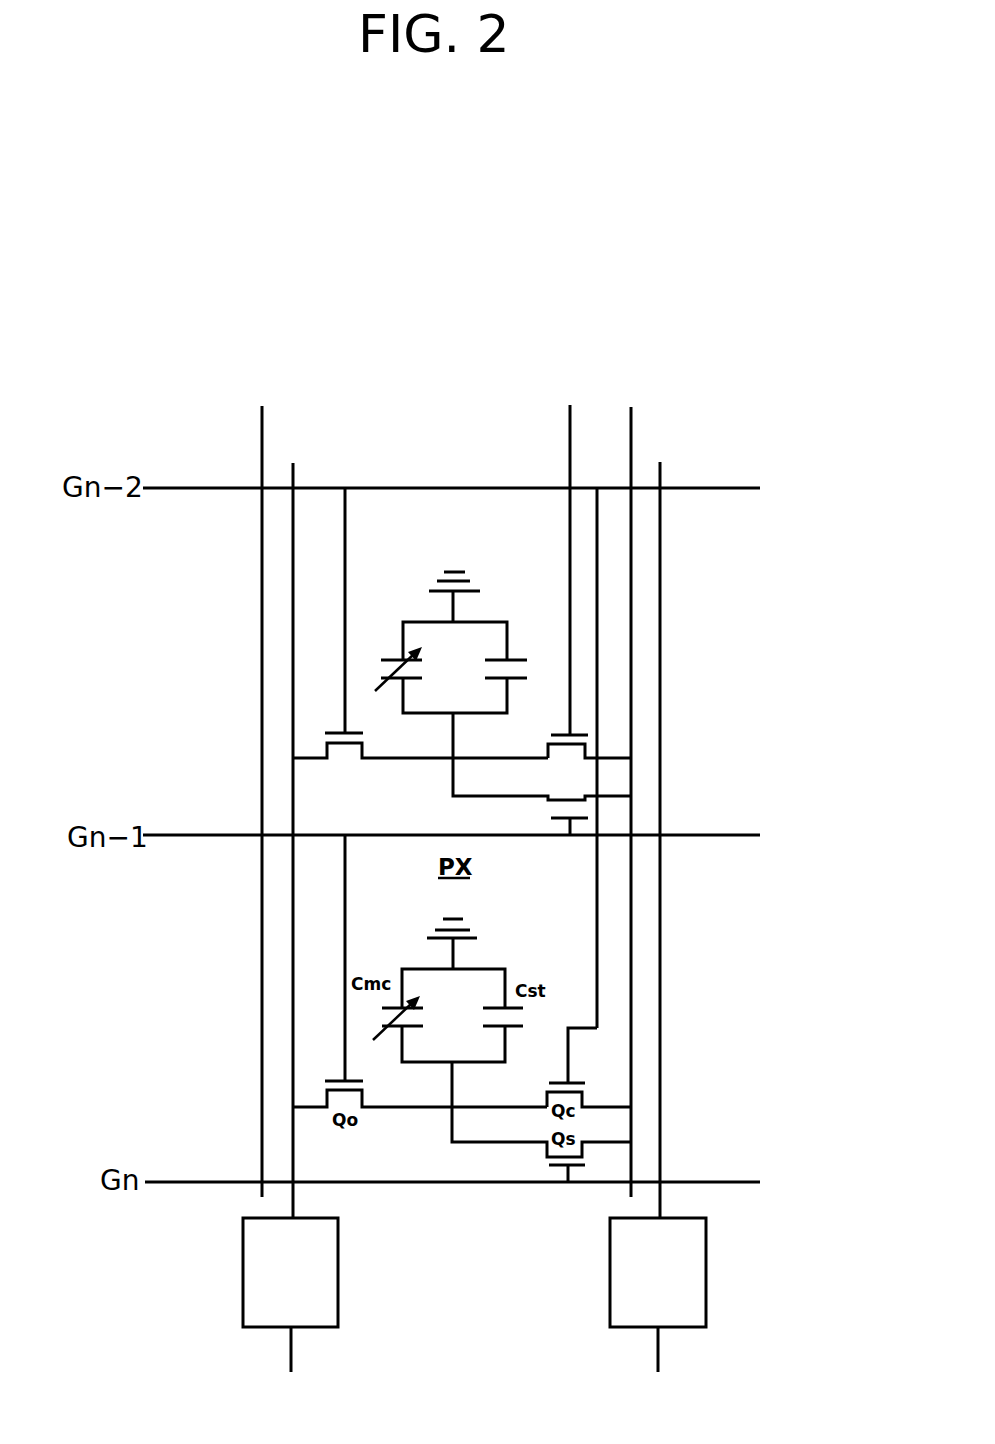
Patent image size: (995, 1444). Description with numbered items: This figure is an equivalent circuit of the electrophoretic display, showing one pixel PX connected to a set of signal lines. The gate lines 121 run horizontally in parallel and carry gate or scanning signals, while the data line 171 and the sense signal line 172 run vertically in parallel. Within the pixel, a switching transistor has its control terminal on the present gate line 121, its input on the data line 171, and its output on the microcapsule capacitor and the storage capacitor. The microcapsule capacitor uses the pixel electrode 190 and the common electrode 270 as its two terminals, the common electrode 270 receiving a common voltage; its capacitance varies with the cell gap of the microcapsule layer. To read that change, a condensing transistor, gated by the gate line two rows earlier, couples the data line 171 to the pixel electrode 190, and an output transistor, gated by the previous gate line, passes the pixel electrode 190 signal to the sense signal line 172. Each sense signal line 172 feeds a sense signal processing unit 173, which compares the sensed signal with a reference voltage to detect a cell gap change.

The gate line 121 is at (202, 1182).
The data line 171 is at (262, 433).
The sense signal line 172 is at (293, 640).
The sense signal processing unit 173 is at (243, 1275).
The pixel electrode 190 is at (457, 1057).
The common electrode 270 is at (457, 967).